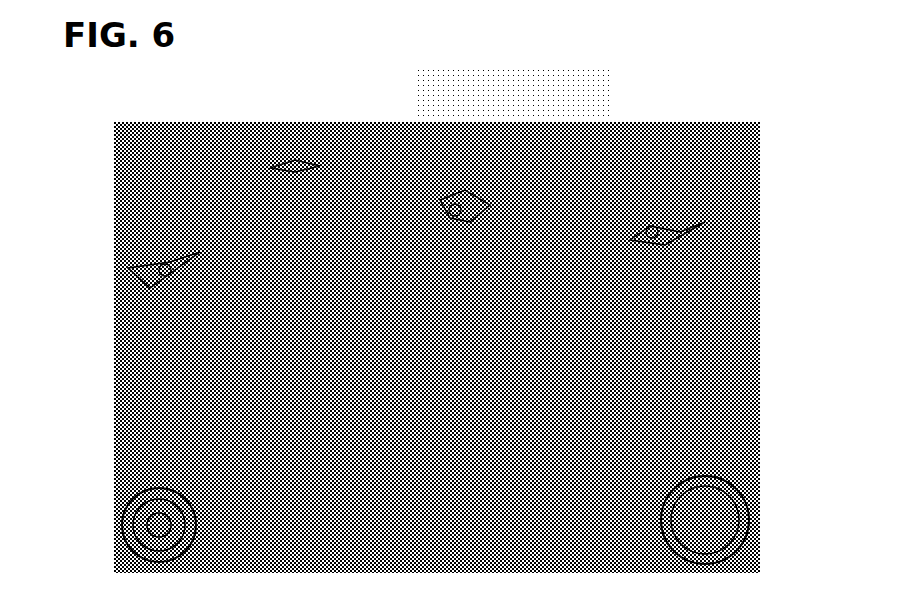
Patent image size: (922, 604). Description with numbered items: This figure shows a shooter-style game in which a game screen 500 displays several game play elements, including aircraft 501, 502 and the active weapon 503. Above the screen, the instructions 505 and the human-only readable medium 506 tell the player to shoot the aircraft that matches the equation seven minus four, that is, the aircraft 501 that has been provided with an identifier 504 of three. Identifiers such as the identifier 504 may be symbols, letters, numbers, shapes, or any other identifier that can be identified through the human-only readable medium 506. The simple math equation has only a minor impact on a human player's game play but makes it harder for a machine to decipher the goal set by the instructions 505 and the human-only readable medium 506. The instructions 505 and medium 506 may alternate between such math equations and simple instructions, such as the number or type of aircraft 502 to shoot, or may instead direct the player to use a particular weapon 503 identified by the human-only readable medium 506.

The game screen 500 is at (118, 165).
The aircraft 501 is at (130, 266).
The aircraft 502 is at (293, 162).
The active weapon 503 is at (735, 500).
The identifier 504 is at (647, 227).
The instructions 505 is at (276, 84).
The human-only readable medium 506 is at (443, 92).